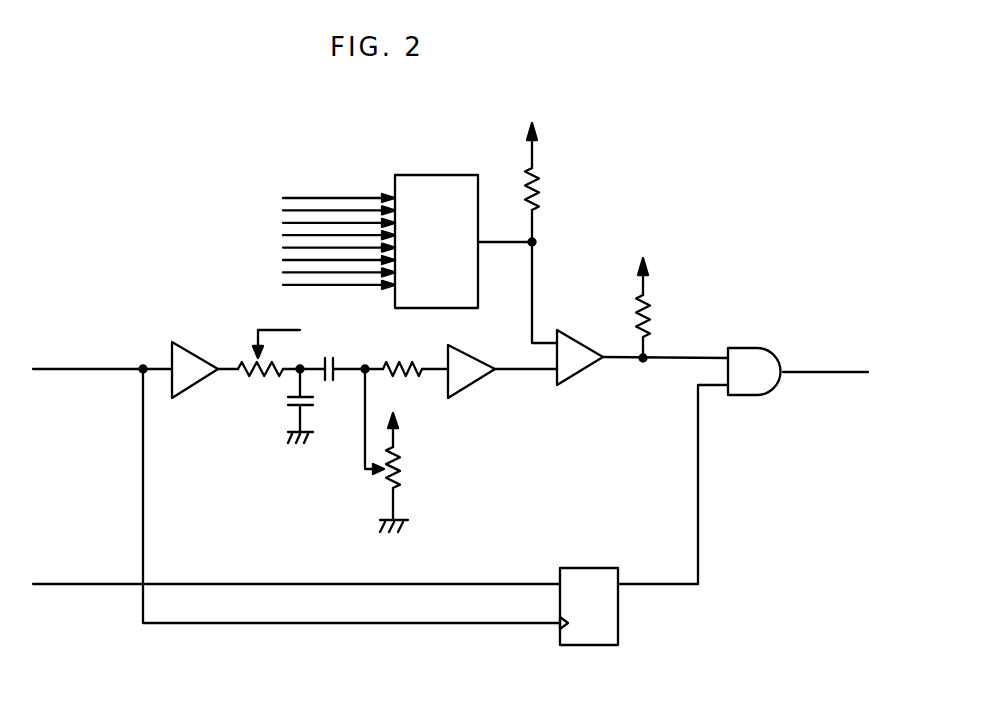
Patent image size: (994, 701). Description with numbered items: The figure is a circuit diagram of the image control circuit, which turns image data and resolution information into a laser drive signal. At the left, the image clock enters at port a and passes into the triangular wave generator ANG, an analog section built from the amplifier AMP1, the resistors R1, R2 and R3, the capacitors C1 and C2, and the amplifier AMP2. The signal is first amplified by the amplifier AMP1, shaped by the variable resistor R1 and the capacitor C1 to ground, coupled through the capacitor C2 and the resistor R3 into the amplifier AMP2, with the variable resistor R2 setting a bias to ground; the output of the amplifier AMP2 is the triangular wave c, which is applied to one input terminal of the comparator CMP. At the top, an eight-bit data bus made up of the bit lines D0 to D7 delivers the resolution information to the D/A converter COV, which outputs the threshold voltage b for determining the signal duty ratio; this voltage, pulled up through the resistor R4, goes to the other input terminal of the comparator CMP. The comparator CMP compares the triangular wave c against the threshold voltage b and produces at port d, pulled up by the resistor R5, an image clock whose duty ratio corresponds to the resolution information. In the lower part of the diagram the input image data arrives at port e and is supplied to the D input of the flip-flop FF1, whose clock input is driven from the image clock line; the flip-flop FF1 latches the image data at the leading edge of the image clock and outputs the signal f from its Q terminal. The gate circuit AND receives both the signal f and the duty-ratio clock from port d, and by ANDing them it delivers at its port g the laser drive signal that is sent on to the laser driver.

The image clock signal a is at (87, 365).
The threshold voltage b is at (504, 241).
The triangular wave c is at (533, 374).
The duty-ratio clock signal d is at (680, 352).
The image data port e is at (80, 581).
The latched data signal f is at (660, 583).
The gate output port g is at (821, 368).
The amplifier AMP1 is at (186, 340).
The resistor R1 is at (250, 378).
The capacitor C1 is at (314, 401).
The capacitor C2 is at (331, 358).
The resistor R3 is at (403, 360).
The resistor R2 is at (406, 478).
The amplifier AMP2 is at (470, 400).
The comparator CMP is at (573, 331).
The D/A converter COV is at (438, 173).
The bit line D0 is at (245, 264).
The bit line D7 is at (312, 271).
The resistor R4 is at (562, 182).
The resistor R5 is at (653, 311).
The gate circuit AND is at (753, 398).
The flip-flop FF1 is at (588, 566).
The triangular wave generator ANG is at (274, 494).